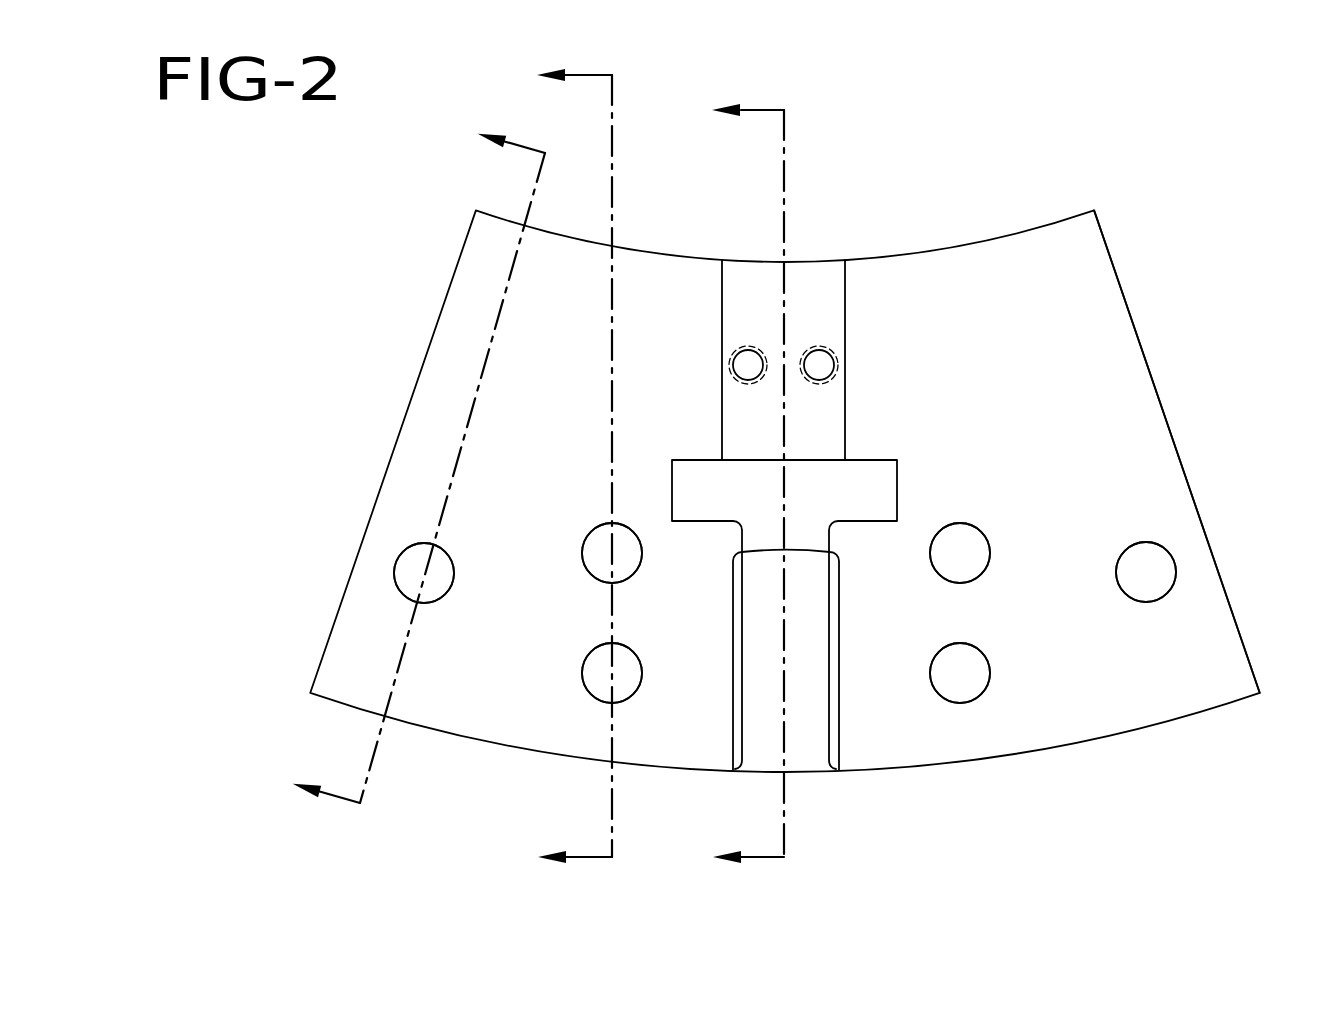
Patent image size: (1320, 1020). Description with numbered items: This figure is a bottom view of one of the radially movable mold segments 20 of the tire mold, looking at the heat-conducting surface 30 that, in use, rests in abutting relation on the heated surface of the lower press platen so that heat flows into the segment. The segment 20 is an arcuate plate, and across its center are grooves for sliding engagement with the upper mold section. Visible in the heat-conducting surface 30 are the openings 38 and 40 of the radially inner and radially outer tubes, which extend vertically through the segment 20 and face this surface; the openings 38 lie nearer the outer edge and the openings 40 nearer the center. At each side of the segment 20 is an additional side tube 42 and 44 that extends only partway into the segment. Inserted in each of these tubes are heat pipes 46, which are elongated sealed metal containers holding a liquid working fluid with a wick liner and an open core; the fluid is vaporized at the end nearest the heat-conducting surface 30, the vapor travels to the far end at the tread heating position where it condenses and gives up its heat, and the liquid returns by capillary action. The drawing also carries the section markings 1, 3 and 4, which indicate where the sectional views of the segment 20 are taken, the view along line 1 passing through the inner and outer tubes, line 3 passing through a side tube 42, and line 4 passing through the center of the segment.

The mold segment 20 is at (455, 375).
The heat-conducting surface 30 is at (1110, 372).
The openings 38 is at (632, 692).
The openings 40 is at (628, 527).
The side tube 42 is at (410, 553).
The side tube 44 is at (1160, 545).
The heat pipes 46 is at (405, 586).
The section line 1- 1 is at (560, 471).
The section line 3- 3 is at (402, 462).
The section line 4- 4 is at (733, 487).